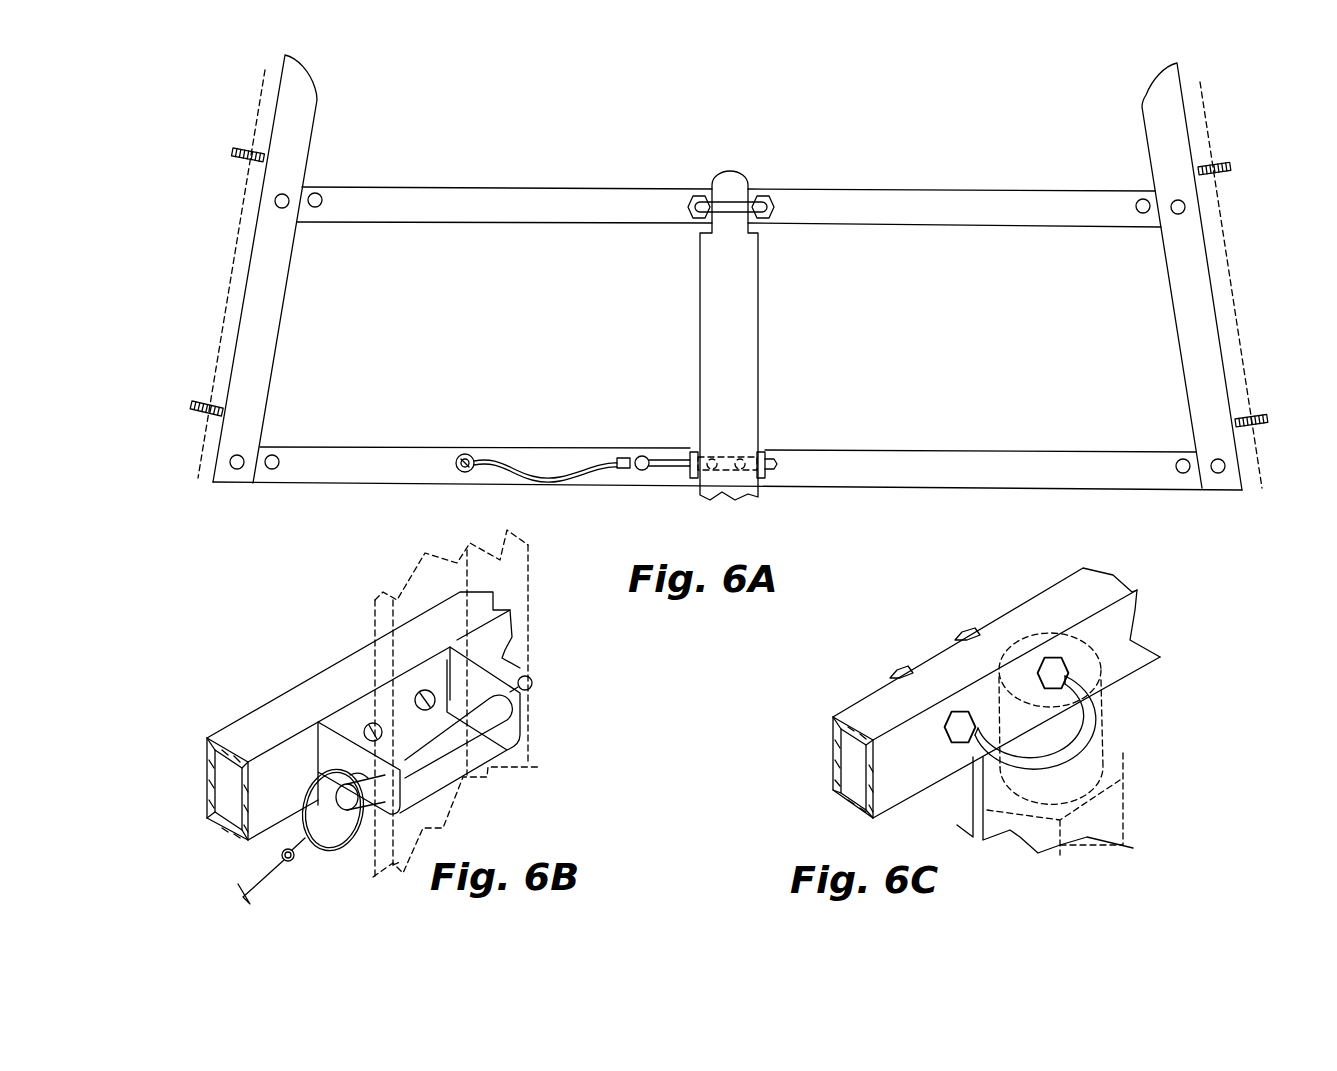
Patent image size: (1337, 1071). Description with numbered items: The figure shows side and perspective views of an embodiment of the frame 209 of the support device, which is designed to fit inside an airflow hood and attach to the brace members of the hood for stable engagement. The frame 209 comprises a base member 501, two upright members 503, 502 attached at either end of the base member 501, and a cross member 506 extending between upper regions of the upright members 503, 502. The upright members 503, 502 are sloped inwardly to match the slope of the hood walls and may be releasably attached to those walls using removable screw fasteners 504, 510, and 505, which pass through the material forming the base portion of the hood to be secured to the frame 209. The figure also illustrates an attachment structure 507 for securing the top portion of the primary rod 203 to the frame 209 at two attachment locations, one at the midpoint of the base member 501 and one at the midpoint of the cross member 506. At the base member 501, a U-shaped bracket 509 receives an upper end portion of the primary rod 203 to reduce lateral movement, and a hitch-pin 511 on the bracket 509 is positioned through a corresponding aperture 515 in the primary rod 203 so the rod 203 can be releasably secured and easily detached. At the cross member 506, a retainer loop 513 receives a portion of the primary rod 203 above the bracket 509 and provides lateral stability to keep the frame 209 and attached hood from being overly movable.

In FIG. 6A, the primary rod 203 is at (718, 338).
In FIG. 6A, the frame 209 is at (230, 228).
In FIG. 6A, the base member 501 is at (973, 478).
In FIG. 6B, the base member 501 is at (270, 717).
In FIG. 6A, the upright member 502 is at (1157, 75).
In FIG. 6A, the upright member 503 is at (302, 65).
In FIG. 6A, the screw fastener 504 is at (240, 153).
In FIG. 6A, the bolt 505 is at (1232, 165).
In FIG. 6A, the cross member 506 is at (813, 183).
In FIG. 6C, the cross member 506 is at (868, 720).
In FIG. 6A, the attachment structure 507 is at (598, 484).
In FIG. 6A, the bracket 509 is at (695, 452).
In FIG. 6B, the bracket 509 is at (340, 750).
In FIG. 6A, the screw fastener 510 is at (1272, 407).
In FIG. 6A, the hitch-pin 511 is at (703, 463).
In FIG. 6B, the hitch-pin 511 is at (442, 748).
In FIG. 6A, the retainer loop 513 is at (720, 207).
In FIG. 6C, the retainer loop 513 is at (1117, 725).
In FIG. 6A, the aperture 515 is at (768, 452).